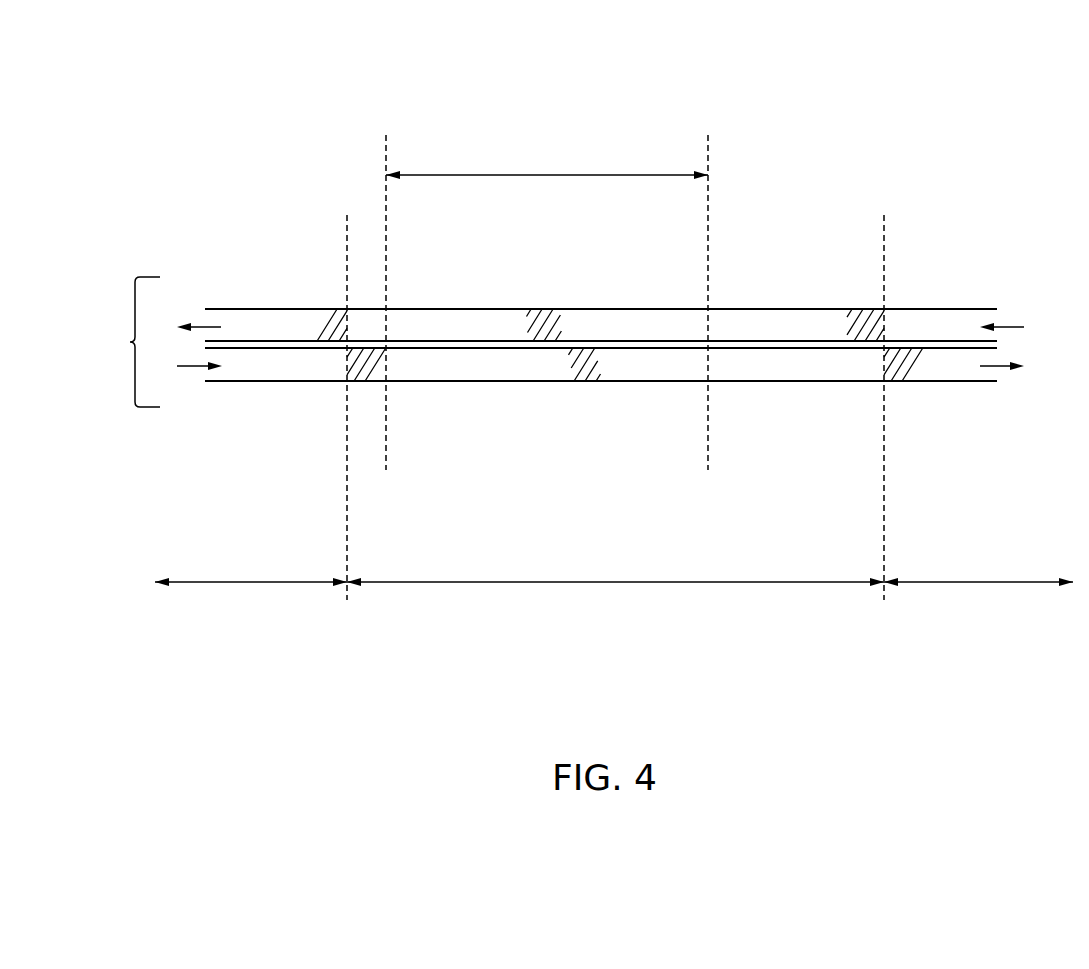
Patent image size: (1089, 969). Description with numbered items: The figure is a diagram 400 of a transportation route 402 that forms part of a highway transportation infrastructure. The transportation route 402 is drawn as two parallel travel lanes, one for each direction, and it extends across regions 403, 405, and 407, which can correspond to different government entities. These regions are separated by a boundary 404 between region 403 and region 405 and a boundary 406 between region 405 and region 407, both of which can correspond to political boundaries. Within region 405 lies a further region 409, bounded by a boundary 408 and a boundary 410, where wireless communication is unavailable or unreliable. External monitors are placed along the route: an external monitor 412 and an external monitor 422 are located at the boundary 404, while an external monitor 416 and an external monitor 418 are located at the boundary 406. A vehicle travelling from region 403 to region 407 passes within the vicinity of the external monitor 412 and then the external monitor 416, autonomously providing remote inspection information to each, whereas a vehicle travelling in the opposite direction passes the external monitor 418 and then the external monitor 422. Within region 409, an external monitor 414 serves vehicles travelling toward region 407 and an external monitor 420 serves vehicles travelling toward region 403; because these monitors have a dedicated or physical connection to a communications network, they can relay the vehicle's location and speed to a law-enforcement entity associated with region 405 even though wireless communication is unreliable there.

The diagram 400 is at (617, 63).
The transportation route 402 is at (112, 342).
The region 403 is at (200, 583).
The boundary 404 is at (349, 425).
The region 405 is at (615, 583).
The boundary 406 is at (884, 427).
The region 407 is at (948, 583).
The boundary 408 is at (384, 285).
The region 409 is at (472, 174).
The boundary 410 is at (708, 285).
The external monitor 412 is at (358, 367).
The external monitor 414 is at (573, 364).
The external monitor 416 is at (905, 380).
The external monitor 418 is at (872, 322).
The external monitor 420 is at (542, 317).
The external monitor 422 is at (332, 320).